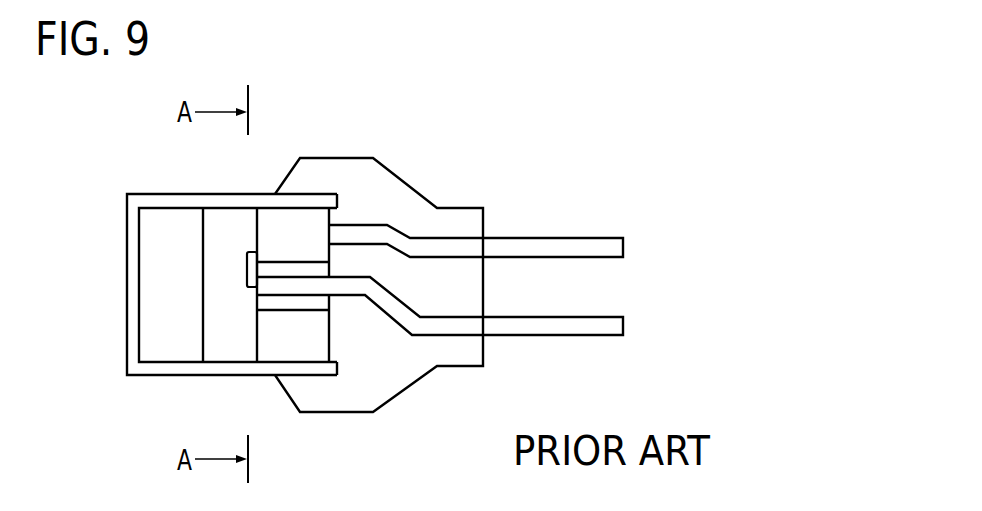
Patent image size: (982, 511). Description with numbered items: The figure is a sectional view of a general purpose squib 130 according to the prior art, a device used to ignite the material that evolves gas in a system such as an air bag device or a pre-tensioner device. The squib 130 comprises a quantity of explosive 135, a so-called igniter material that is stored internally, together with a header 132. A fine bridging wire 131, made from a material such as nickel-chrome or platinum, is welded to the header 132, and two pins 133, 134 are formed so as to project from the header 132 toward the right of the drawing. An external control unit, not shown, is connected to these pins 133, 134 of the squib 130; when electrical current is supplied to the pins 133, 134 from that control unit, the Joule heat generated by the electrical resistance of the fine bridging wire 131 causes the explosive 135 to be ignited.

The squib 130 is at (531, 136).
The fine wire (bridging wire) 131 is at (247, 268).
The header 132 is at (310, 350).
The pin 133 is at (565, 246).
The pin 134 is at (565, 328).
The explosive 135 is at (233, 350).